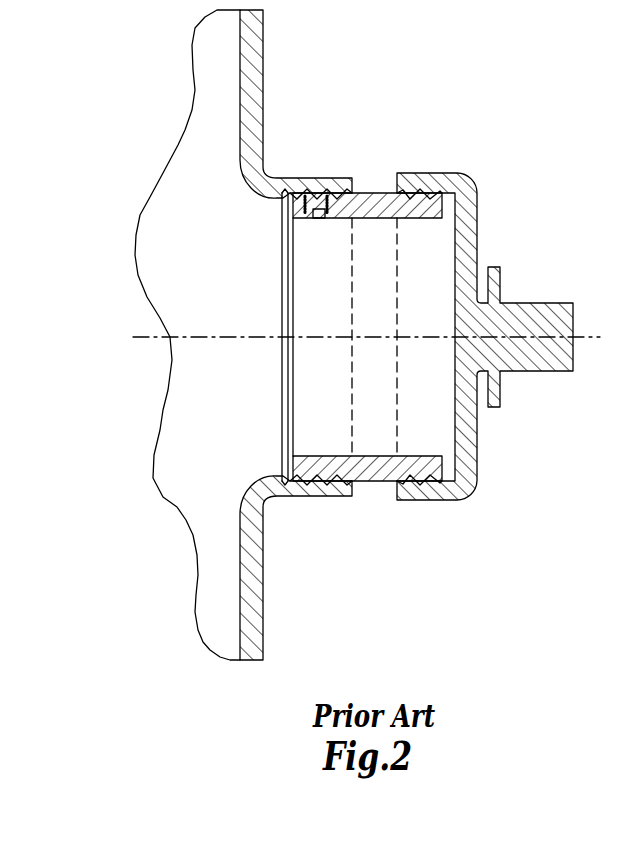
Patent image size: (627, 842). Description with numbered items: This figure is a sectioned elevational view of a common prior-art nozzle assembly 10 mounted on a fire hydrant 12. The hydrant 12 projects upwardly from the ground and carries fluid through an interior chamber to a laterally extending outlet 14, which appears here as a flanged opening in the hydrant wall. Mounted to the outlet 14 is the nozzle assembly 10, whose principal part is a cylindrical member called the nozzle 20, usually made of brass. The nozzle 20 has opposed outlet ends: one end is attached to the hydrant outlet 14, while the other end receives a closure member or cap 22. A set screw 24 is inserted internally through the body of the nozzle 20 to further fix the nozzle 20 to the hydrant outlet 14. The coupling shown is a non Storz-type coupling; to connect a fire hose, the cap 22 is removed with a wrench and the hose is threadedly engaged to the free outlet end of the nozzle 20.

The nozzle assembly 10 is at (477, 142).
The fire hydrant 12 is at (262, 602).
The outlet 14 is at (305, 183).
The nozzle 20 is at (372, 483).
The cap 22 is at (458, 492).
The set screw 24 is at (295, 220).